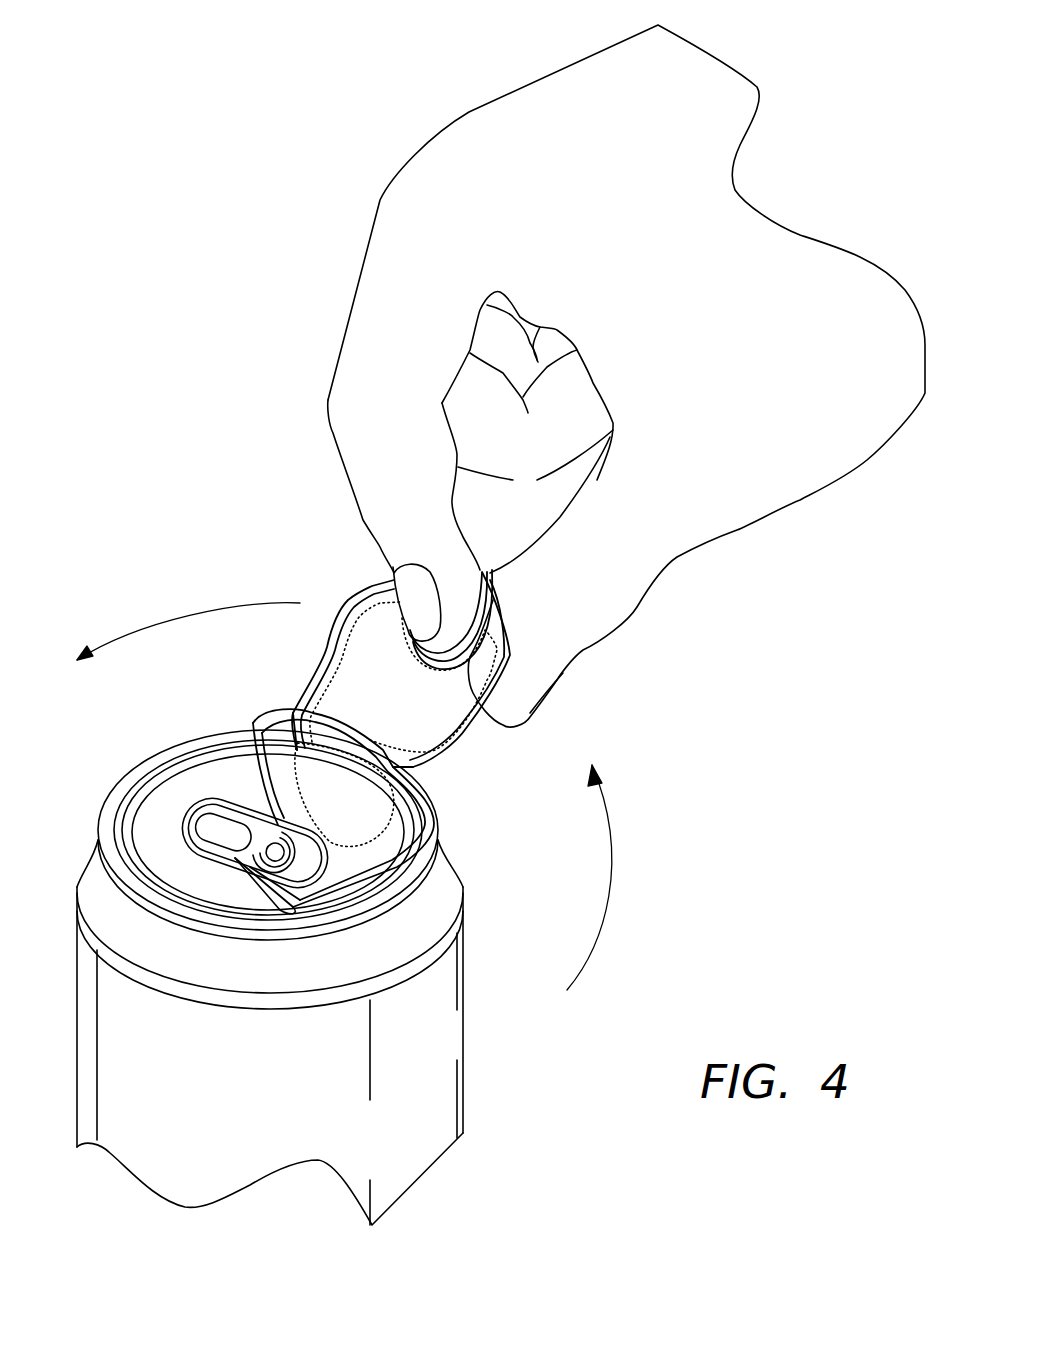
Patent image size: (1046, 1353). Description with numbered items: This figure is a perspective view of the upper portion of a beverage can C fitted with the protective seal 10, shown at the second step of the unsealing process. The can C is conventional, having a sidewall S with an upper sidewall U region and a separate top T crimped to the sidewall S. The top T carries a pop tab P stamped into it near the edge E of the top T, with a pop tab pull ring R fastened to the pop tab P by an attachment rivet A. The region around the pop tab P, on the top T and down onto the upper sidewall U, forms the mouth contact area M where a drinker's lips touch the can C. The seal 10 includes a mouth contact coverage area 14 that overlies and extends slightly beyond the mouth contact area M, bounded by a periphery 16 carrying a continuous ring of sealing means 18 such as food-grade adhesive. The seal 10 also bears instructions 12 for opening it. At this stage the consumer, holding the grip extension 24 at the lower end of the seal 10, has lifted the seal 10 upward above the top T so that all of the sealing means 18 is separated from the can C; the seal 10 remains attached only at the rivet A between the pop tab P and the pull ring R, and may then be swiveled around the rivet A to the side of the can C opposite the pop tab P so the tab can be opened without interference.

The protective seal 10 is at (323, 563).
The instructions 12 is at (297, 750).
The mouth contact coverage area 14 is at (390, 716).
The periphery 16 is at (340, 607).
The sealing means 18 is at (330, 642).
The grip extension 24 is at (490, 570).
The can c is at (542, 1112).
The pop tab pull ring R is at (220, 810).
The top T is at (147, 810).
The edge E is at (100, 817).
The attachment rivet A is at (272, 835).
The pop tab P is at (260, 890).
The mouth contact area M is at (407, 967).
The upper sidewall U is at (123, 1014).
The sidewall S is at (120, 1137).